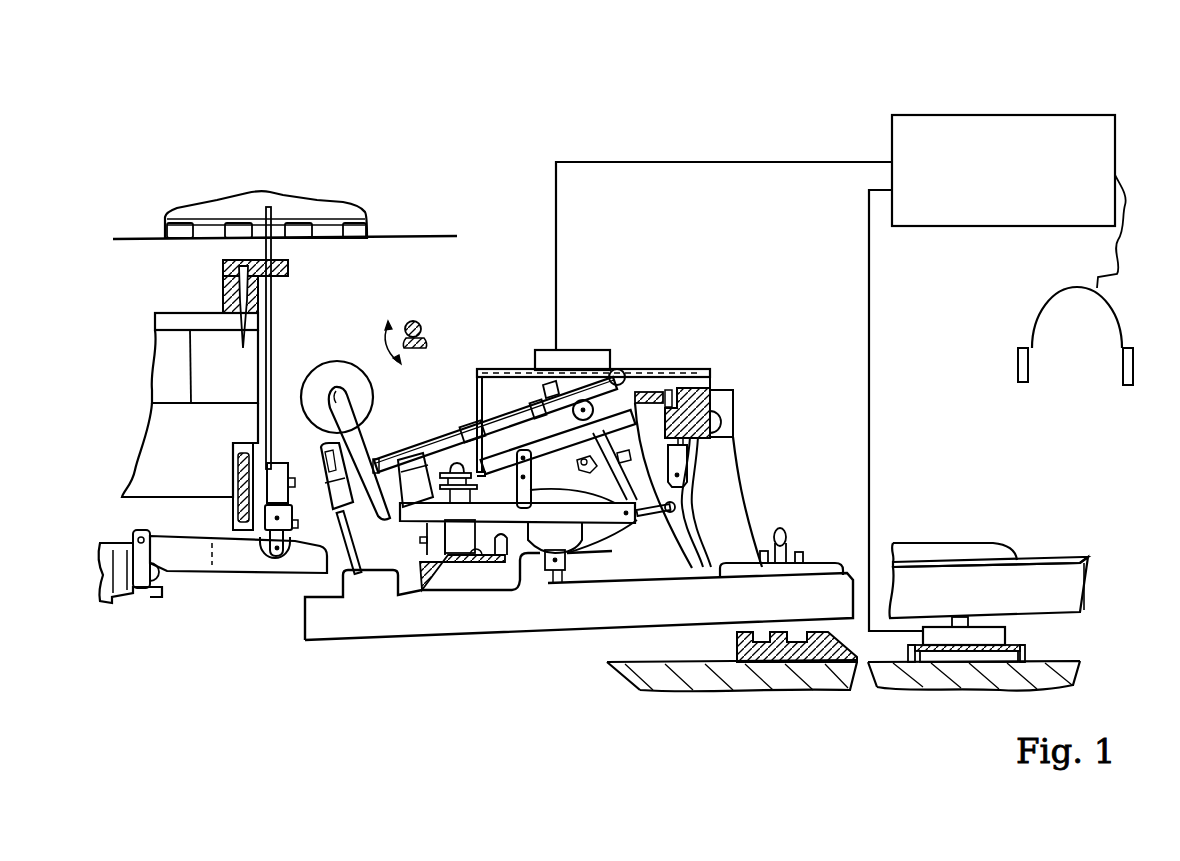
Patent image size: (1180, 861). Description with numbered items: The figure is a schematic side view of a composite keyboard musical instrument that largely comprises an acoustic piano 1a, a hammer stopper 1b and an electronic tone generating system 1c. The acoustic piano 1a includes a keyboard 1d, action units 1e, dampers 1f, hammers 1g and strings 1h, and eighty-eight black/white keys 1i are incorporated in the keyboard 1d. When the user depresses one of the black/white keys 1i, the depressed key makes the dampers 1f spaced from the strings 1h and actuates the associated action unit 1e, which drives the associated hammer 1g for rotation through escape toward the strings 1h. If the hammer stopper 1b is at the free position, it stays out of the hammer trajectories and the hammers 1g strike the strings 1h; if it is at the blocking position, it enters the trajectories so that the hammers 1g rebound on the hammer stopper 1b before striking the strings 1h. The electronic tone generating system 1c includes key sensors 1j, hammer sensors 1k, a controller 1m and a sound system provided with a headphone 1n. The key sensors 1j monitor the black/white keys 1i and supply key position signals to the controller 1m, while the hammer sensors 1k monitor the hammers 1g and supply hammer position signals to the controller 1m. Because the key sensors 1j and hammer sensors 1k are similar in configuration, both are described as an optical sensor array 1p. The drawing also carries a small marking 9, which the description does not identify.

The acoustic piano 1a is at (83, 206).
The hammer stopper 1b is at (413, 321).
The electronic tone generating system 1c is at (969, 94).
The keyboard 1d is at (1008, 524).
The action units 1e is at (600, 437).
The dampers 1f is at (227, 205).
The hammers 1g is at (333, 362).
The strings 1h is at (405, 235).
The black/white keys 1i is at (952, 557).
The key sensors 1j is at (1030, 624).
The hammer sensors 1k is at (607, 327).
The controller 1m is at (931, 227).
The headphone 1n is at (1018, 351).
The optical sensor array 1p is at (607, 327).
The lever 9 is at (316, 515).